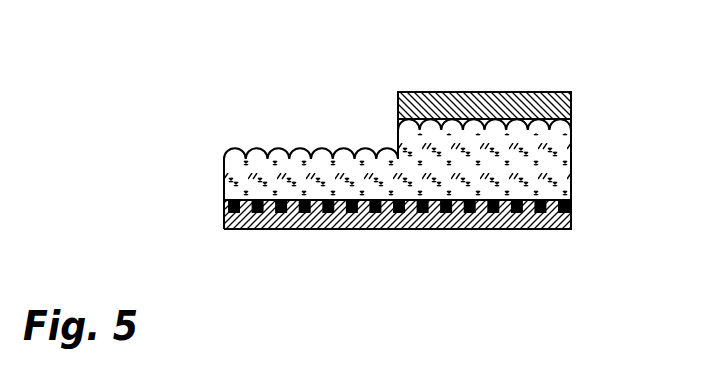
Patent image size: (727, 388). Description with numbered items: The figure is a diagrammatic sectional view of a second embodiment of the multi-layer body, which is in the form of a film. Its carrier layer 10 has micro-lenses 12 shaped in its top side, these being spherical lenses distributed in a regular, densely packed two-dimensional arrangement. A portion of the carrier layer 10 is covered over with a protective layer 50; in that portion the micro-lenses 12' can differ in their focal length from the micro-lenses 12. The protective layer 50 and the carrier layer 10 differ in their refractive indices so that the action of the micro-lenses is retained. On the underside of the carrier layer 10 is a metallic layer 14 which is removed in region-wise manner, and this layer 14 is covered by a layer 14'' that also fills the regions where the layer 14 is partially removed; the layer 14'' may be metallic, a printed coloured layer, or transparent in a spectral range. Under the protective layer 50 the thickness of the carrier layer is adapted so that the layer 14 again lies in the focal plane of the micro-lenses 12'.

The carrier layer 10 is at (552, 173).
The micro-lenses 12 is at (311, 109).
The micro-lenses 12' is at (484, 80).
The protective layer 50 is at (492, 113).
The metallic layer 14 is at (437, 219).
The layer 14'' is at (417, 240).